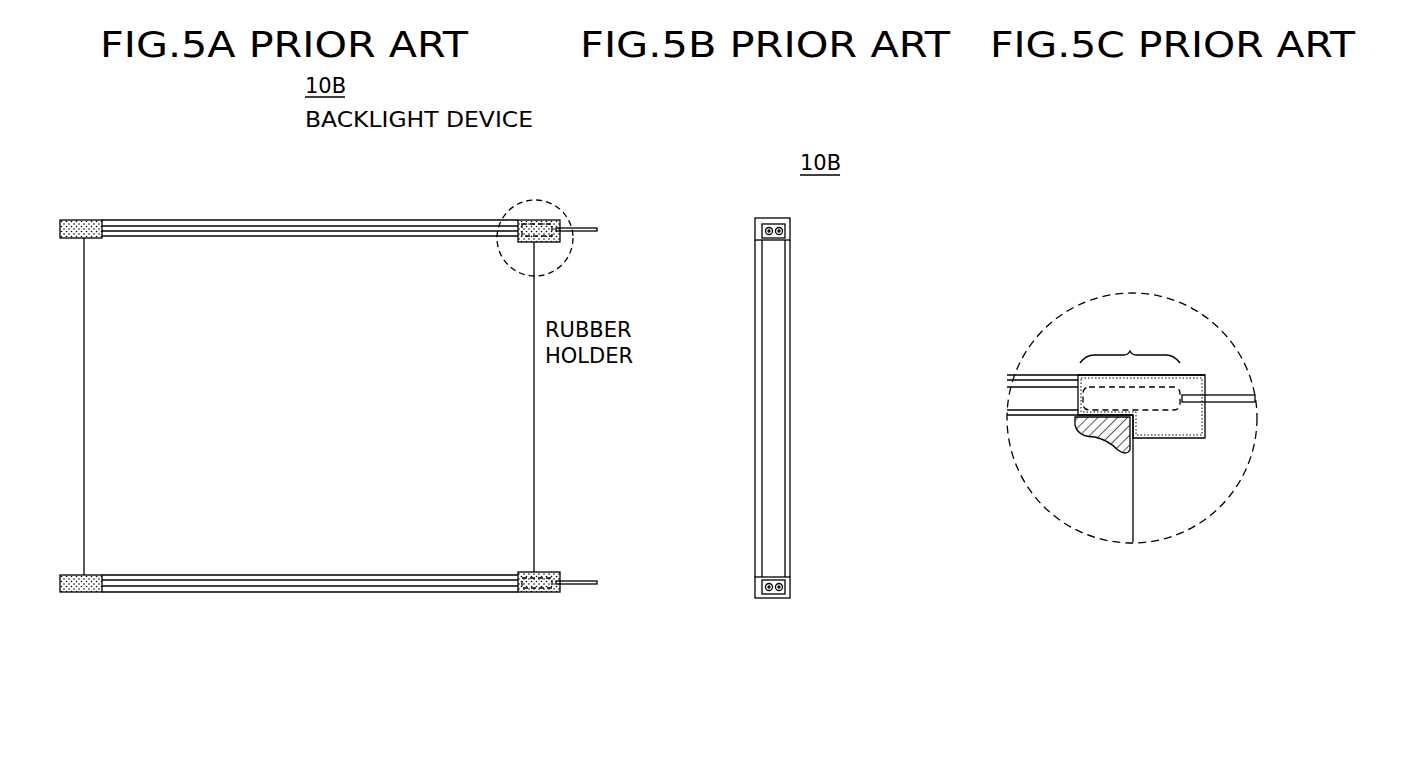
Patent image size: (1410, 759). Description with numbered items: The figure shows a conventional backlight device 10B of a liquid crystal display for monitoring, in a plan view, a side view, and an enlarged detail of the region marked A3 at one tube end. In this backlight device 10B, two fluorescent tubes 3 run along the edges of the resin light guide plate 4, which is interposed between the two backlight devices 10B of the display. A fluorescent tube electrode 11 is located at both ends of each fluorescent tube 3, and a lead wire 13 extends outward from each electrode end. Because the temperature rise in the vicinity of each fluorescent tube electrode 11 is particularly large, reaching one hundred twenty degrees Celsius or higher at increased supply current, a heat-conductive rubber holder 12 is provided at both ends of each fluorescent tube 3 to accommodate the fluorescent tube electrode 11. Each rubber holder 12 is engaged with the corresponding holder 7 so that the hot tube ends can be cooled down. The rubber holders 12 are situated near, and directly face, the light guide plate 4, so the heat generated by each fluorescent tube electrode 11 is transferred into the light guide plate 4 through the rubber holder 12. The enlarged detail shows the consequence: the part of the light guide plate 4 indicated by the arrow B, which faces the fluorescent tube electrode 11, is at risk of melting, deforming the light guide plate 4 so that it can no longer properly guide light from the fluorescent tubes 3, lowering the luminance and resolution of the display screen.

In FIG. 5A, the fluorescent tube 3 is at (173, 226).
In FIG. 5B, the fluorescent tube 3 is at (782, 239).
In FIG. 5C, the fluorescent tube 3 is at (1050, 398).
In FIG. 5A, the light guide plate 4 is at (343, 532).
In FIG. 5B, the light guide plate 4 is at (771, 393).
In FIG. 5C, the light guide plate 4 is at (1072, 480).
In FIG. 5A, the holder 7 is at (244, 220).
In FIG. 5C, the backlight device 10B is at (1185, 317).
In FIG. 5A, the fluorescent tube electrode 11 is at (518, 223).
In FIG. 5C, the fluorescent tube electrode 11 is at (1078, 240).
In FIG. 5A, the rubber holder 12 is at (66, 221).
In FIG. 5B, the rubber holder 12 is at (770, 218).
In FIG. 5C, the rubber holder 12 is at (1162, 428).
In FIG. 5A, the lead wire 13 is at (584, 228).
In FIG. 5C, the lead wire 13 is at (1236, 398).
In FIG. 5A, the detail region A3 is at (546, 200).
In FIG. 5C, the arrow B is at (1100, 440).